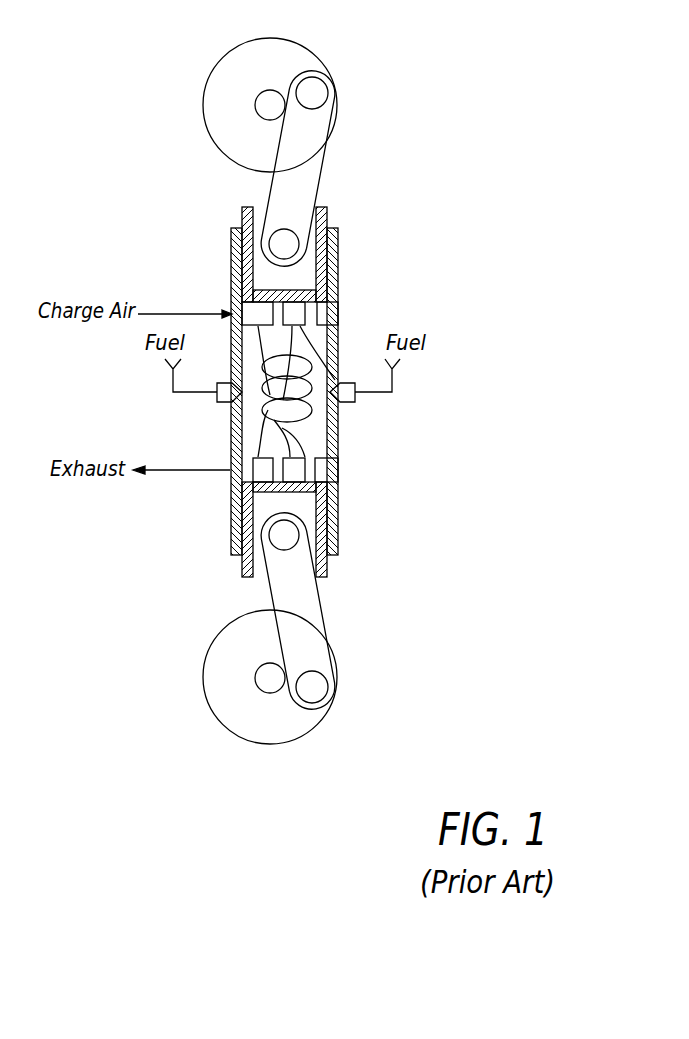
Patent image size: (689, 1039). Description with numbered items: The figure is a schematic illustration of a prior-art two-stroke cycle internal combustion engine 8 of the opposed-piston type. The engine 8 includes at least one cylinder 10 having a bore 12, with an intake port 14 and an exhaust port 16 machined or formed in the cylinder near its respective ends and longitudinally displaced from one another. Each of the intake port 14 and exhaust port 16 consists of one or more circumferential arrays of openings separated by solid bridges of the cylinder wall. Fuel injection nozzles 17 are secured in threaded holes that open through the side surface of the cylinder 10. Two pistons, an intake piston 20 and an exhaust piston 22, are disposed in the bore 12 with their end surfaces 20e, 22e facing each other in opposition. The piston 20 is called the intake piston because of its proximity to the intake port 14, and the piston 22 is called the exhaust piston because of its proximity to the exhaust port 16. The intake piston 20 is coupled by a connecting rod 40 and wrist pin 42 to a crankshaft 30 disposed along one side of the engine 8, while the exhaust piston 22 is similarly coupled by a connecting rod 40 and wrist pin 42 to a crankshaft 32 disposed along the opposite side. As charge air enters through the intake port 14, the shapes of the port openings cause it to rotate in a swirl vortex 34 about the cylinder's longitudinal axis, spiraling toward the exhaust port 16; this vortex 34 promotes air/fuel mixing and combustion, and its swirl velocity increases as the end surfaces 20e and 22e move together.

The internal combustion engine 8 is at (78, 164).
The cylinder 10 is at (230, 538).
The bore 12 is at (250, 427).
The intake port 14 is at (340, 314).
The exhaust port 16 is at (339, 472).
The fuel injection nozzles 17 is at (226, 383).
The intake piston 20 is at (242, 244).
The end surface of intake piston 20e is at (248, 316).
The exhaust piston 22 is at (266, 527).
The end surface of exhaust piston 22e is at (248, 477).
The crankshaft 30 is at (206, 75).
The crankshaft 32 is at (230, 733).
The vortex 34 is at (322, 356).
The connecting rod 40 is at (323, 158).
The wrist pin 42 is at (287, 242).